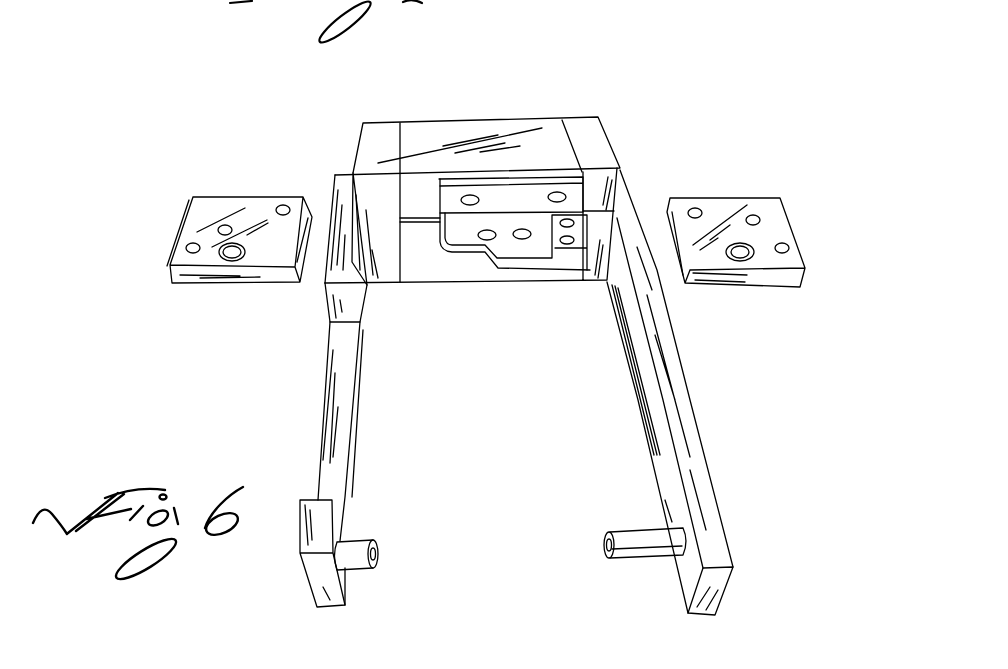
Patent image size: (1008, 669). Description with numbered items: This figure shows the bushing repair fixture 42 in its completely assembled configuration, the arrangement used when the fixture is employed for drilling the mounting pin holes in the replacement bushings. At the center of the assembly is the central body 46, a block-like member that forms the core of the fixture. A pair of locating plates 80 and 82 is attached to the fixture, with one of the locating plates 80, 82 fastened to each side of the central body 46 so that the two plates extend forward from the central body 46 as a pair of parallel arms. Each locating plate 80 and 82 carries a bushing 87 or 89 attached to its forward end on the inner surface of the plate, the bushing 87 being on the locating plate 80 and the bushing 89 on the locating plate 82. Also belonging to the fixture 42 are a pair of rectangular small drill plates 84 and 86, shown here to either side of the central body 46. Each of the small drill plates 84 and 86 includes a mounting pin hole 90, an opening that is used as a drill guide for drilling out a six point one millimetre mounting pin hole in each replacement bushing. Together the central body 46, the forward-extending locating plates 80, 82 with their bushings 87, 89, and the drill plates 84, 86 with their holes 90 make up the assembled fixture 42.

The bushing repair fixture 42 is at (668, 125).
The central body 46 is at (517, 120).
The locating plate 80 is at (325, 376).
The locating plate 82 is at (700, 418).
The small drill plate 84 is at (188, 220).
The small drill plate 86 is at (762, 192).
The bushing 87 is at (367, 535).
The bushing 89 is at (634, 560).
The mounting pin hole 90 is at (225, 257).